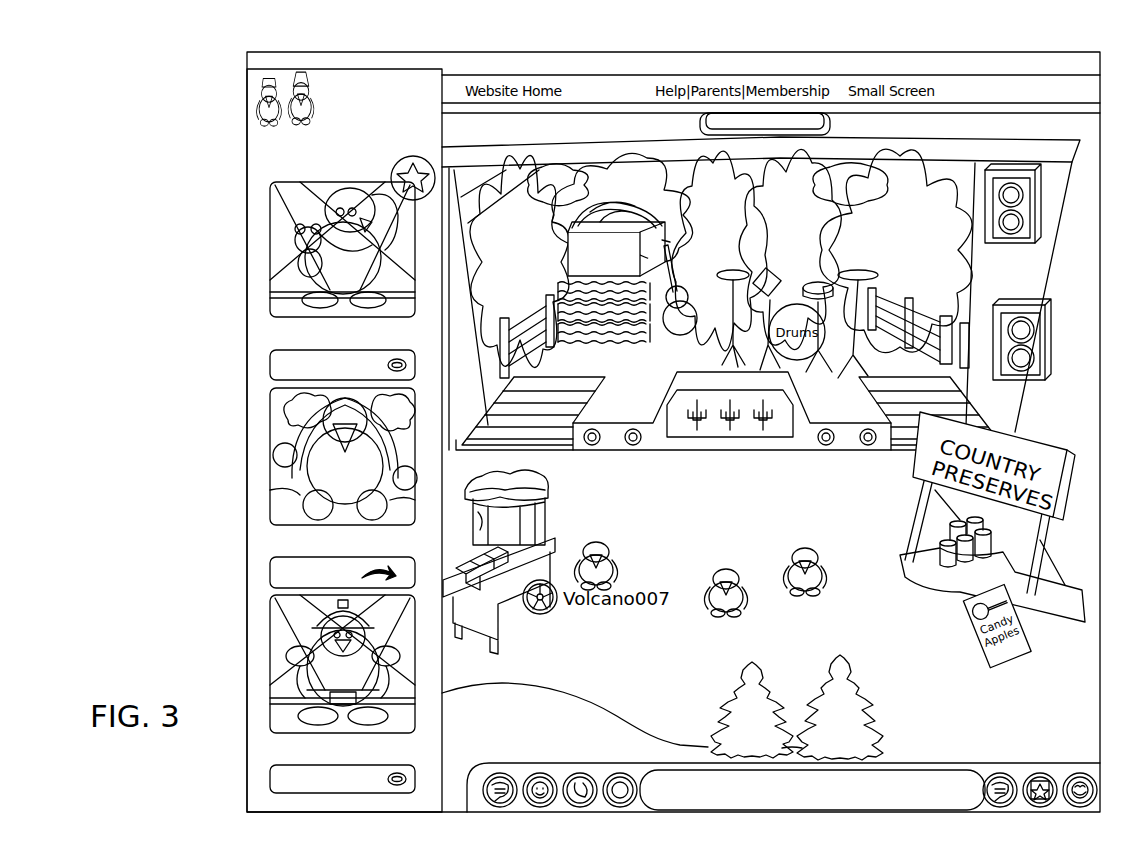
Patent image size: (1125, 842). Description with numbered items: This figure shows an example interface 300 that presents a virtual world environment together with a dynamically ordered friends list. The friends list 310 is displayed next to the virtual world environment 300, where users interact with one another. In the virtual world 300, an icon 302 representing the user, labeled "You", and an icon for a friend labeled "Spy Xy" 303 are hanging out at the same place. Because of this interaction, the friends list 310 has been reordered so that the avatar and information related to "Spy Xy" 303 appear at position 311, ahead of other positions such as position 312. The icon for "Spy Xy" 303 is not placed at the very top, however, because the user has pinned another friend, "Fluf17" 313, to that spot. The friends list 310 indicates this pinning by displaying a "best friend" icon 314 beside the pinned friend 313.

The interface 300 is at (786, 52).
The friends list 310 is at (302, 68).
The position 311 is at (270, 478).
The position 312 is at (270, 630).
The pinned friend (Fluf17) 313 is at (270, 245).
The best friend icon 314 is at (391, 176).
The user icon (You) 302 is at (726, 566).
The friend icon (Spy Xy) 303 is at (812, 550).